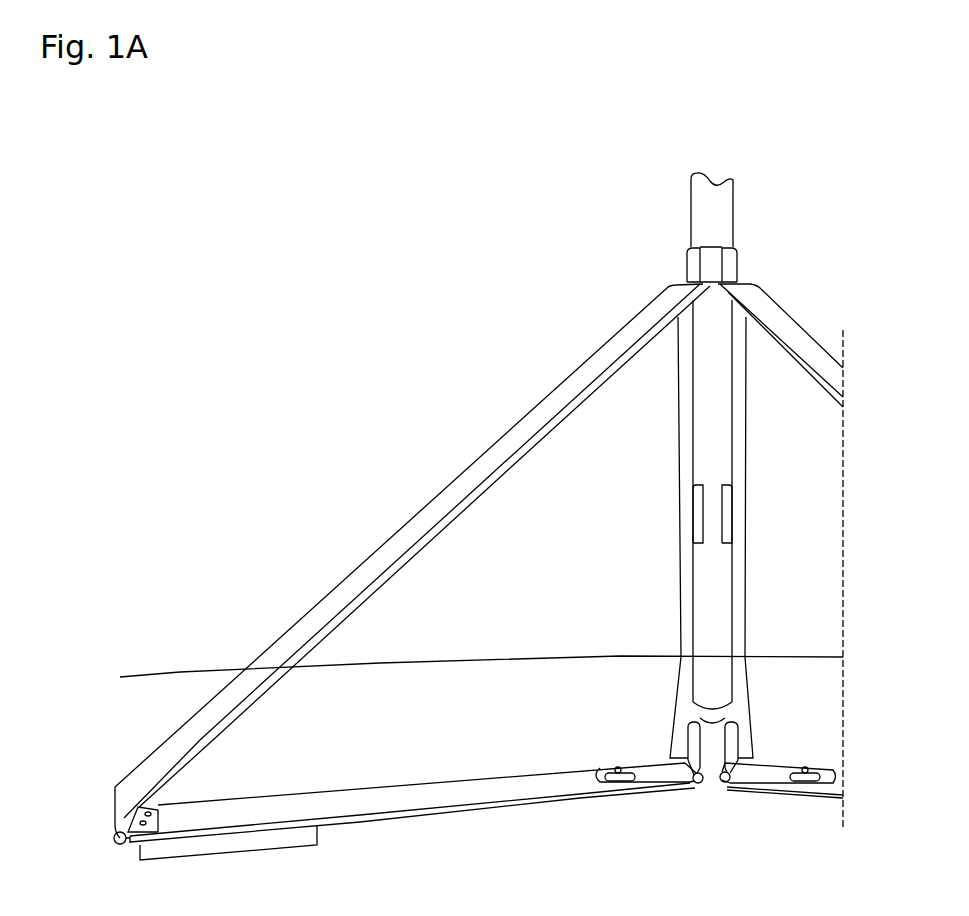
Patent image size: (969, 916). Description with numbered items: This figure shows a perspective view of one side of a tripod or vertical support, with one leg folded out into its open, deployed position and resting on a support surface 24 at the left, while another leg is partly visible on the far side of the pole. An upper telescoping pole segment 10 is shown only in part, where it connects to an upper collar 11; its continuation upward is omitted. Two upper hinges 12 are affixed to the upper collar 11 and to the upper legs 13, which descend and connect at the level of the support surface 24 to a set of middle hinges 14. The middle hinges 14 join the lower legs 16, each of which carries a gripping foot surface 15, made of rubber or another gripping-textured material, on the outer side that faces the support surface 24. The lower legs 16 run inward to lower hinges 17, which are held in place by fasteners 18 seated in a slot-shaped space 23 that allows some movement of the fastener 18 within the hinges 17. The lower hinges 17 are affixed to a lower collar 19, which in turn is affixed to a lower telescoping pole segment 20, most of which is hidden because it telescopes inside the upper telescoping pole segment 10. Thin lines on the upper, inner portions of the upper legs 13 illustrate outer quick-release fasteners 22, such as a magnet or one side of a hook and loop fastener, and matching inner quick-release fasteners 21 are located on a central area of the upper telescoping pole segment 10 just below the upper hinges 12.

The upper telescoping pole segment 10 is at (718, 222).
The upper collar 11 is at (717, 268).
The upper hinges 12 is at (690, 266).
The upper legs 13 is at (687, 327).
The middle hinges 14 is at (160, 808).
The gripping foot surface 15 is at (297, 830).
The lower legs 16 is at (415, 786).
The lower hinges 17 is at (733, 738).
The fasteners 18 is at (618, 770).
The lower collar 19 is at (711, 786).
The lower telescoping pole segment 20 is at (705, 713).
The inner quick-release fasteners 21 is at (723, 522).
The outer quick-release fasteners 22 is at (537, 452).
The slot-shaped space 23 is at (607, 790).
The support surface 24 is at (160, 670).